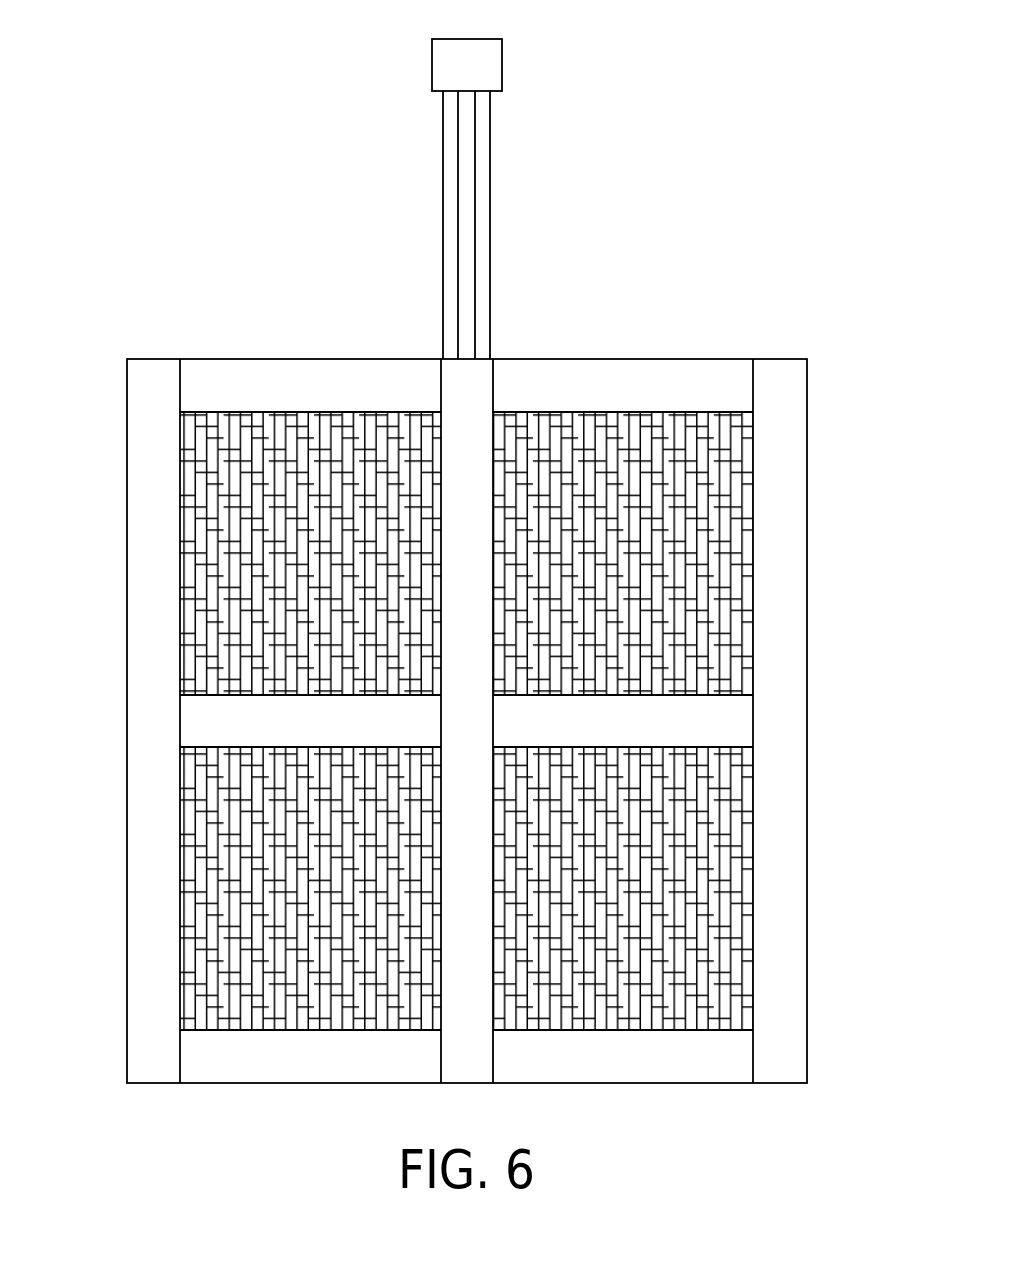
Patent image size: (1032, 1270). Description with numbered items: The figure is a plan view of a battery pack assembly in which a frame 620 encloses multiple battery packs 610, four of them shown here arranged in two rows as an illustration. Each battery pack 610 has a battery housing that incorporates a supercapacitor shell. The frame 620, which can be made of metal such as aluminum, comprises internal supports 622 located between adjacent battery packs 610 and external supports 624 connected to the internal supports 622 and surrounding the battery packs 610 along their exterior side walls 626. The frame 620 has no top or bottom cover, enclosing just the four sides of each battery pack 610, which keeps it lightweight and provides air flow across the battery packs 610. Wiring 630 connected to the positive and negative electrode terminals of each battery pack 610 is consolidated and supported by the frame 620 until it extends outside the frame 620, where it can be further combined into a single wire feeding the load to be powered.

The battery pack 610 is at (244, 509).
The frame 620 is at (700, 367).
The internal supports 622 is at (662, 718).
The external supports 624 is at (303, 372).
The exterior side walls 626 is at (755, 627).
The wiring 630 is at (490, 224).